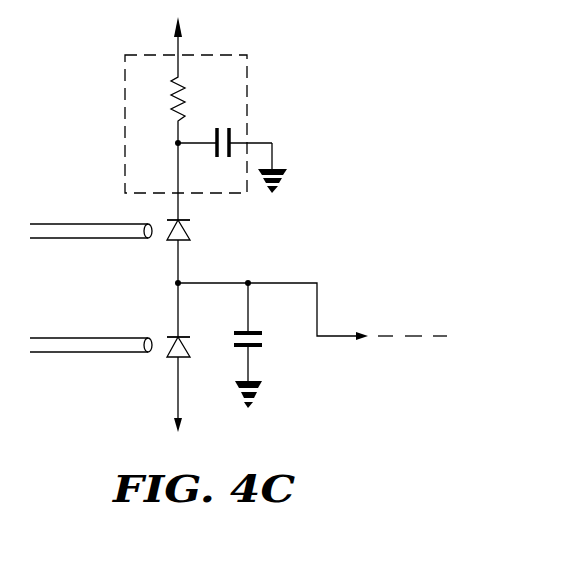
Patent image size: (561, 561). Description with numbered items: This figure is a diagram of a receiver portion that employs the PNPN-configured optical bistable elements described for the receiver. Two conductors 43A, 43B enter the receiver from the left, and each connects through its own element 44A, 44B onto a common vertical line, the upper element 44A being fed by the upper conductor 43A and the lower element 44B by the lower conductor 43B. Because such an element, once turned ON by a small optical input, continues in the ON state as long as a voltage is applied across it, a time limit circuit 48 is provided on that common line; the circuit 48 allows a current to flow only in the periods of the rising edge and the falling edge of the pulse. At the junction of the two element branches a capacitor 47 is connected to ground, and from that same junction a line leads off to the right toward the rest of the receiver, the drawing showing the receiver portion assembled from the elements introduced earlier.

The first conductor 43A is at (63, 232).
The second conductor 43B is at (62, 345).
The first diode 44A is at (187, 233).
The second diode 44B is at (175, 338).
The capacitor 47 is at (258, 347).
The time limit circuit 48 is at (244, 93).